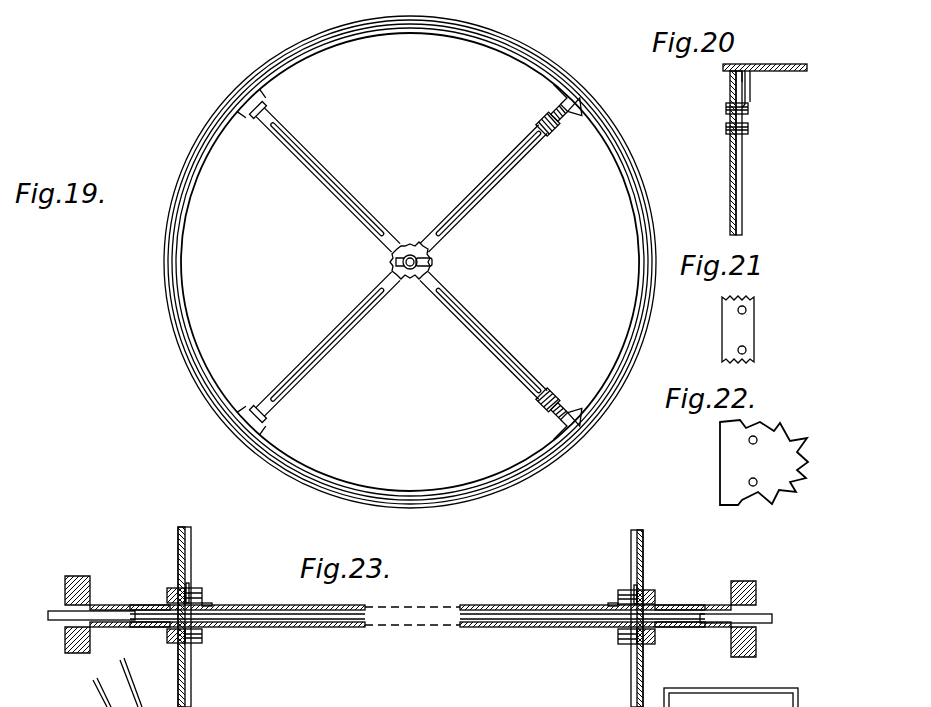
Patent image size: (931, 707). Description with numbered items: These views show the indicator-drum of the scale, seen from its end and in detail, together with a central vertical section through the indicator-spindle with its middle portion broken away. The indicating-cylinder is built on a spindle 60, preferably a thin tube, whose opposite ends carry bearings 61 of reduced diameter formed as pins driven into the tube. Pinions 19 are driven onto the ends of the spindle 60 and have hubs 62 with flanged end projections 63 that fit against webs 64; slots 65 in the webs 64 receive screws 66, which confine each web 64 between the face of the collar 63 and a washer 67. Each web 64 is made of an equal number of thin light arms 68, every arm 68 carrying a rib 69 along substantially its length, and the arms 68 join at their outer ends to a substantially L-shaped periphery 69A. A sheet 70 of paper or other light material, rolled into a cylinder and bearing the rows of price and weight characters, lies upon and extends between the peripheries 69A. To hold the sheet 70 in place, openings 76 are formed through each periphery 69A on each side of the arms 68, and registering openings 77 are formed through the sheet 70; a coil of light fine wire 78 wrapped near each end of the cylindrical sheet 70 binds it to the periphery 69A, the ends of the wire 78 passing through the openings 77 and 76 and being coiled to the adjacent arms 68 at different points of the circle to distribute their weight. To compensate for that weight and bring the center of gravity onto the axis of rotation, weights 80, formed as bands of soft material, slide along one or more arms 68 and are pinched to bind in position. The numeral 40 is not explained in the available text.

In FIG. 19, the pinion 19 is at (388, 265).
In FIG. 23, the pinion 19 is at (75, 578).
In FIG. 23, the frame member 40 is at (150, 706).
In FIG. 19, the spindle 60 is at (432, 254).
In FIG. 23, the spindle 60 is at (310, 612).
In FIG. 19, the bearings 61 is at (436, 264).
In FIG. 23, the bearings 61 is at (55, 612).
In FIG. 23, the hub 62 is at (124, 606).
In FIG. 23, the flanged end projection 63 is at (172, 588).
In FIG. 19, the web 64 is at (405, 240).
In FIG. 23, the web 64 is at (190, 594).
In FIG. 23, the slot 65 is at (212, 603).
In FIG. 23, the screw 66 is at (204, 596).
In FIG. 23, the washer 67 is at (204, 633).
In FIG. 19, the arm 68 is at (282, 140).
In FIG. 20, the arm 68 is at (732, 200).
In FIG. 23, the arm 68 is at (643, 532).
In FIG. 19, the rib 69 is at (340, 196).
In FIG. 20, the rib 69 is at (730, 82).
In FIG. 23, the rib 69 is at (634, 530).
In FIG. 19, the L-shaped periphery 69A is at (172, 238).
In FIG. 20, the L-shaped periphery 69A is at (762, 72).
In FIG. 20, the sheet 70 is at (790, 64).
In FIG. 22, the sheet 70 is at (764, 462).
In FIG. 20, the opening 76 is at (752, 82).
In FIG. 21, the opening 76 is at (746, 310).
In FIG. 22, the registering opening 77 is at (749, 440).
In FIG. 19, the wire 78 is at (546, 80).
In FIG. 20, the wire 78 is at (755, 70).
In FIG. 19, the weight 80 is at (250, 128).